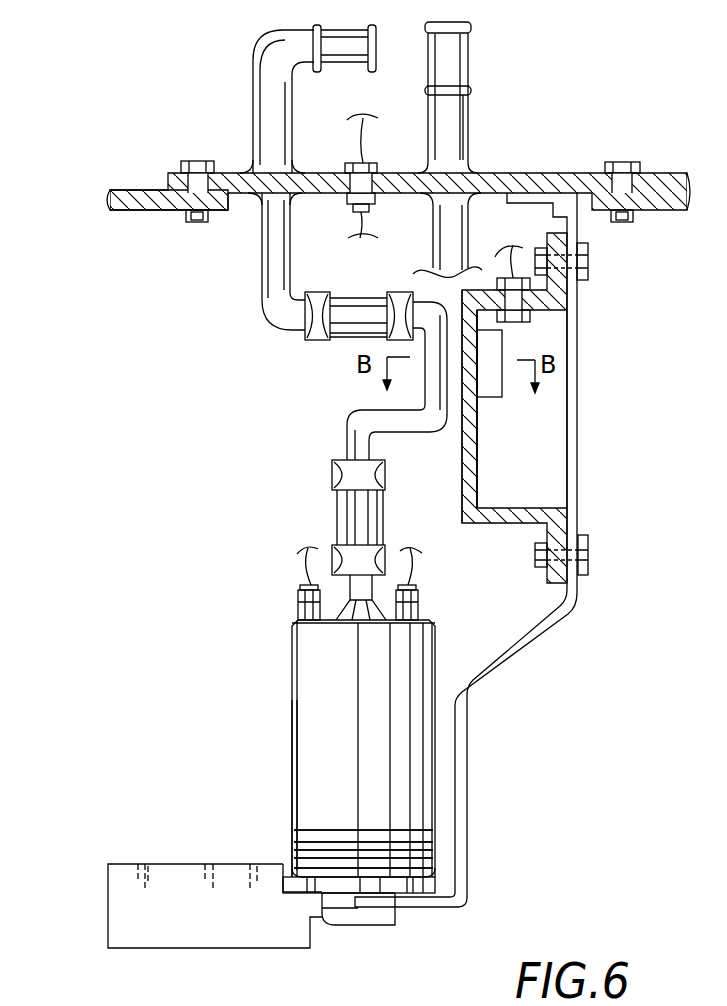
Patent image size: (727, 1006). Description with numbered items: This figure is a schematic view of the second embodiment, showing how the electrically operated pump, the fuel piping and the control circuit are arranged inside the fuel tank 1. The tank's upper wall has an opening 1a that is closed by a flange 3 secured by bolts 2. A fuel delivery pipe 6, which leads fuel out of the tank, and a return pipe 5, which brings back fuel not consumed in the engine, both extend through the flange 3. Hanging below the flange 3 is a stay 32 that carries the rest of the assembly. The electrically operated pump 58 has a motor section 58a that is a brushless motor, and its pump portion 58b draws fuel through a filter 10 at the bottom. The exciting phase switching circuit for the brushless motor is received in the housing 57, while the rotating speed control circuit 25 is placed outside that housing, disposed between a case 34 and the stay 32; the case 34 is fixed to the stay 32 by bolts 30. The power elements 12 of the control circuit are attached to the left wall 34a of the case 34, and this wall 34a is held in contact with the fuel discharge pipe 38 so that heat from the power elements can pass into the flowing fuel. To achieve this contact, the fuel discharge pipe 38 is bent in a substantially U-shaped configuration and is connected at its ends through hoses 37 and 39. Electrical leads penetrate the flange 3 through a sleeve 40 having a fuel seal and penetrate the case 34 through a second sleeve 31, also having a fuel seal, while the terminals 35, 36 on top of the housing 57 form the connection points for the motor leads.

The fuel tank 1 is at (135, 188).
The opening 1a is at (226, 205).
The bolts 2 is at (197, 166).
The flange 3 is at (492, 183).
The return pipe 5 is at (450, 62).
The fuel delivery pipe 6 is at (273, 88).
The filter 10 is at (130, 903).
The power elements 12 is at (487, 390).
The rotating speed control circuit 25 is at (550, 405).
The bolts 30 is at (589, 262).
The sleeve 31 is at (533, 316).
The stay 32 is at (577, 450).
The case 34 is at (463, 477).
The left wall 34a is at (481, 448).
The terminal 35 is at (420, 582).
The terminal 36 is at (298, 582).
The hose 37 is at (350, 520).
The fuel discharge pipe 38 is at (378, 425).
The hose 39 is at (354, 306).
The sleeve 40 is at (350, 168).
The housing 57 is at (312, 678).
The electrically operated pump 58 is at (200, 727).
The motor section 58a is at (288, 745).
The pump ribs 58b is at (292, 832).